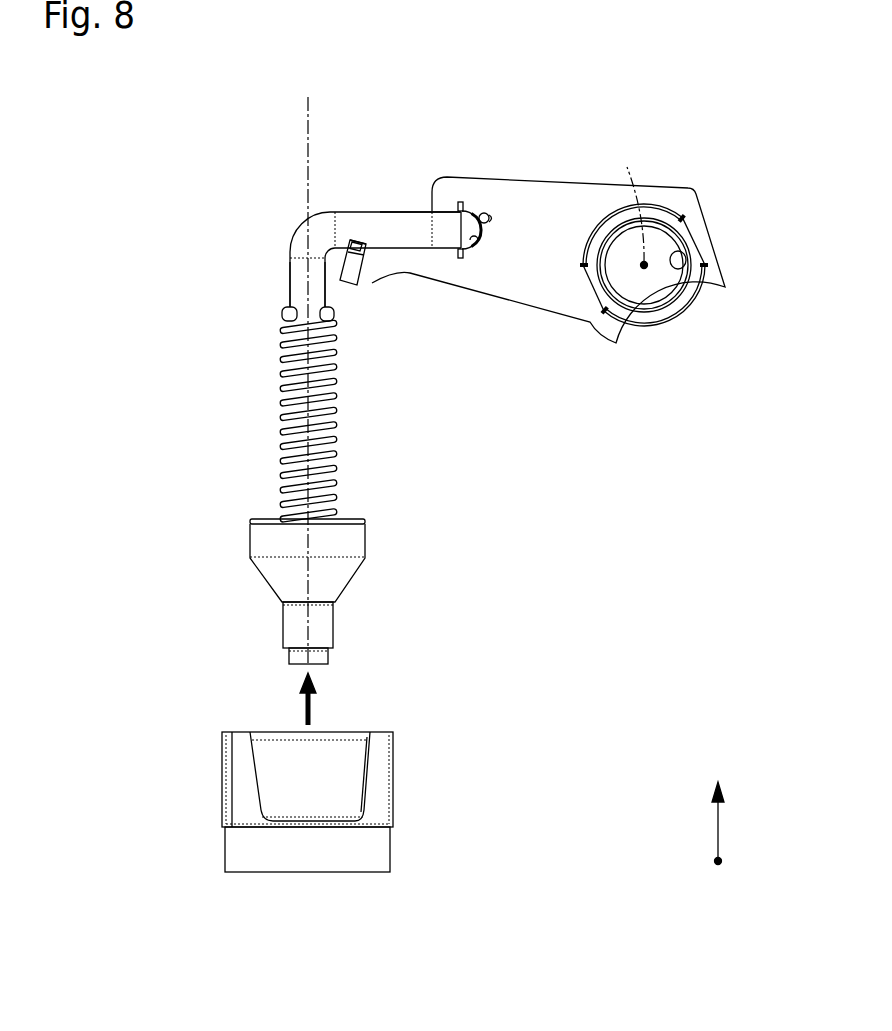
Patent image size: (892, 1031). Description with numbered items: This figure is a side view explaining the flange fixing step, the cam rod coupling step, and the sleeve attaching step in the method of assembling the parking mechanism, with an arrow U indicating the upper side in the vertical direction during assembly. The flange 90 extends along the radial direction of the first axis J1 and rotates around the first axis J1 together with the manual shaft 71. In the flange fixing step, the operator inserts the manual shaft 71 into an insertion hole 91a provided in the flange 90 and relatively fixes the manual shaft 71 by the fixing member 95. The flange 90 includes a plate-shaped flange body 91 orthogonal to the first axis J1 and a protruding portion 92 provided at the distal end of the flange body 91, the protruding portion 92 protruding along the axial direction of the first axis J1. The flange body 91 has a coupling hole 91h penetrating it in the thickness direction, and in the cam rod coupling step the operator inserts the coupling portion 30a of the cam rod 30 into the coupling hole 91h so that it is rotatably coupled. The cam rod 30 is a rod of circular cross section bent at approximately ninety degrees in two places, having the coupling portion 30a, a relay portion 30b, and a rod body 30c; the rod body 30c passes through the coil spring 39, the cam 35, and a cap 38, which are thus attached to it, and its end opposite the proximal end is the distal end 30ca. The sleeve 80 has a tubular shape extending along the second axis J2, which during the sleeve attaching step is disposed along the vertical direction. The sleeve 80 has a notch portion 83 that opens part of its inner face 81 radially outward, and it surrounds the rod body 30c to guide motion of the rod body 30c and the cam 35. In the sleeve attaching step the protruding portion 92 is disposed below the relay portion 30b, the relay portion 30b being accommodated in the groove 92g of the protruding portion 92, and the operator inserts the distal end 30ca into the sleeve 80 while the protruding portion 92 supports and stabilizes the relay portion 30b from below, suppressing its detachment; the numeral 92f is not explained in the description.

The cam rod 30 is at (300, 228).
The coupling portion 30a is at (463, 223).
The relay portion 30b is at (410, 228).
The rod body 30c is at (298, 287).
The distal end 30ca is at (318, 655).
The cam 35 is at (353, 538).
The cap 38 is at (322, 623).
The coil spring 39 is at (282, 412).
The manual shaft 71 is at (660, 278).
The sleeve 80 is at (222, 775).
The inner face 81 is at (322, 772).
The notch portion 83 is at (320, 827).
The flange 90 is at (588, 247).
The flange body 91 is at (537, 285).
The insertion hole 91a is at (672, 267).
The coupling hole 91h is at (478, 232).
The protruding portion 92 is at (355, 263).
The sensor mounting portion 92f is at (358, 242).
The groove 92g is at (362, 242).
The fixing member 95 is at (688, 232).
The first axis J1 is at (631, 199).
The second axis J2 is at (308, 112).
The arrow U is at (718, 808).